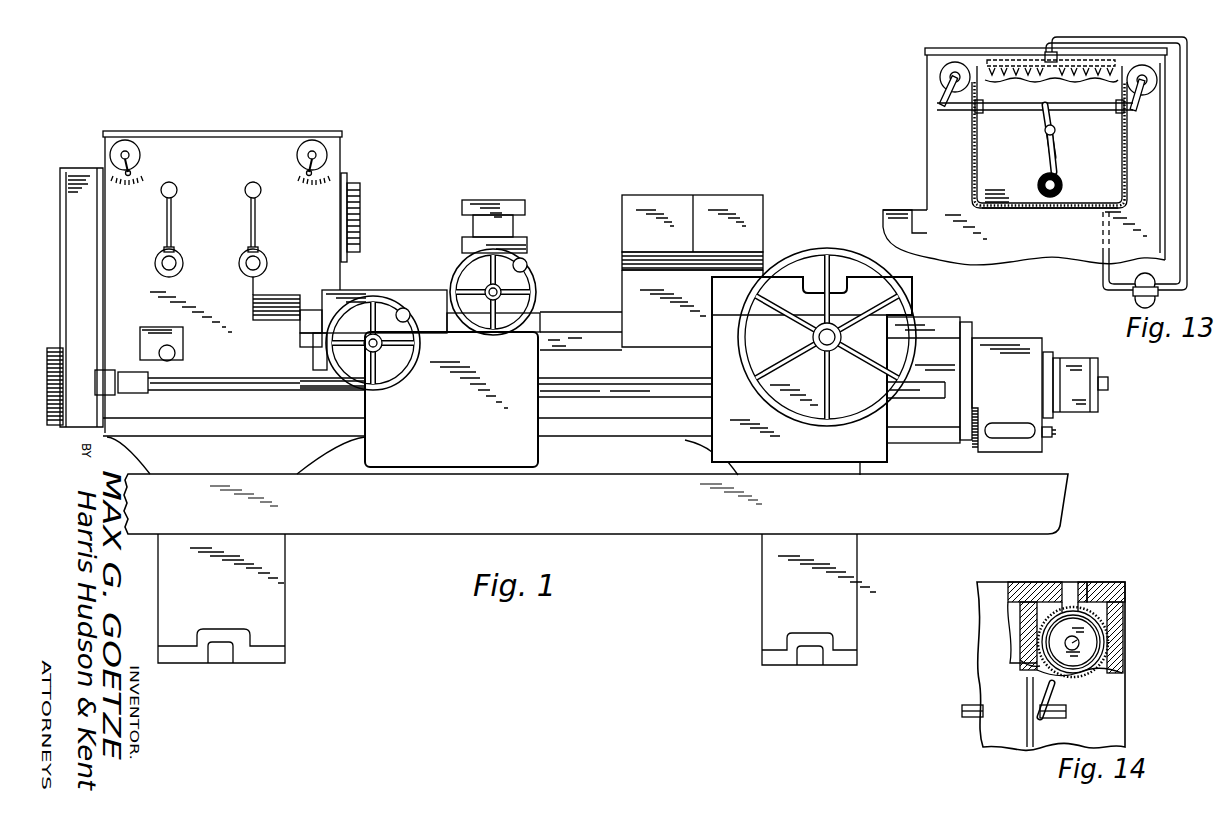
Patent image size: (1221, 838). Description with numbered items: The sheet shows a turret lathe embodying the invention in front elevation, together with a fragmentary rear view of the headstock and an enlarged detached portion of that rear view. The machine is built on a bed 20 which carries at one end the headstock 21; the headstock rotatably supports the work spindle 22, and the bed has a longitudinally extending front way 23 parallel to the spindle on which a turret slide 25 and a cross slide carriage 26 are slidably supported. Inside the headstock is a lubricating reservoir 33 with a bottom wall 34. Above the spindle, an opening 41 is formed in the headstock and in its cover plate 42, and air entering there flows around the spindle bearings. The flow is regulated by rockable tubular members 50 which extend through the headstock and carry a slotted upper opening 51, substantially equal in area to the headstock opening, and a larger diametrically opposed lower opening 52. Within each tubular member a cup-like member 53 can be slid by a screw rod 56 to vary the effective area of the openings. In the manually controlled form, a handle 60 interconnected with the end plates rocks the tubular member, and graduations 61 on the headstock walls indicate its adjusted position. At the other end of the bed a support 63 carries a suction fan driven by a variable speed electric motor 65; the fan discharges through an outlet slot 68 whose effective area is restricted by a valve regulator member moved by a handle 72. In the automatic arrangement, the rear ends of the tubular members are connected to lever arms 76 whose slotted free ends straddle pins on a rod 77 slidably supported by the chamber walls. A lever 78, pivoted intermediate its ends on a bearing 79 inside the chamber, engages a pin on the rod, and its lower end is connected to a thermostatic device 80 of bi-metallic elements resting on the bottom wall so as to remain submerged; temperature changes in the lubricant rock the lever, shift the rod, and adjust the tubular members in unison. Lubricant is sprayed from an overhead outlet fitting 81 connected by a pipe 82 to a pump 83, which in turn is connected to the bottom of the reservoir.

In FIG. 1, the bed 20 is at (624, 433).
In FIG. 1, the headstock 21 is at (227, 147).
In FIG. 13, the headstock 21 is at (930, 155).
In FIG. 14, the headstock 21 is at (1037, 583).
In FIG. 1, the work spindle 22 is at (358, 208).
In FIG. 1, the front way 23 is at (572, 313).
In FIG. 13, the front way 23 is at (895, 210).
In FIG. 1, the turret slide 25 is at (743, 285).
In FIG. 1, the cross slide carriage 26 is at (400, 290).
In FIG. 13, the lubricating reservoir 33 is at (1049, 137).
In FIG. 13, the bottom wall 34 is at (1027, 209).
In FIG. 14, the opening 41 is at (1080, 582).
In FIG. 14, the cover plate 42 is at (1115, 582).
In FIG. 1, the tubular member 50 is at (125, 142).
In FIG. 13, the tubular member 50 is at (955, 62).
In FIG. 14, the tubular member 50 is at (1108, 650).
In FIG. 14, the upper opening 51 is at (1100, 624).
In FIG. 14, the lower opening 52 is at (1020, 662).
In FIG. 14, the cup-like member 53 is at (1086, 634).
In FIG. 14, the screw rod 56 is at (1079, 643).
In FIG. 1, the handle 60 is at (140, 160).
In FIG. 1, the graduations 61 is at (128, 180).
In FIG. 1, the support 63 is at (970, 333).
In FIG. 1, the variable speed electric motor 65 is at (1077, 357).
In FIG. 1, the outlet slot 68 is at (1010, 423).
In FIG. 1, the handle 72 is at (1052, 431).
In FIG. 13, the lever arm 76 is at (940, 97).
In FIG. 14, the lever arm 76 is at (1058, 695).
In FIG. 13, the rod 77 is at (1005, 111).
In FIG. 14, the rod 77 is at (975, 705).
In FIG. 13, the lever 78 is at (1056, 118).
In FIG. 13, the bearing 79 is at (1045, 132).
In FIG. 13, the thermostatic device 80 is at (1062, 185).
In FIG. 13, the overhead outlet fitting 81 is at (1020, 58).
In FIG. 13, the pipe 82 is at (1187, 178).
In FIG. 13, the pump 83 is at (1133, 297).